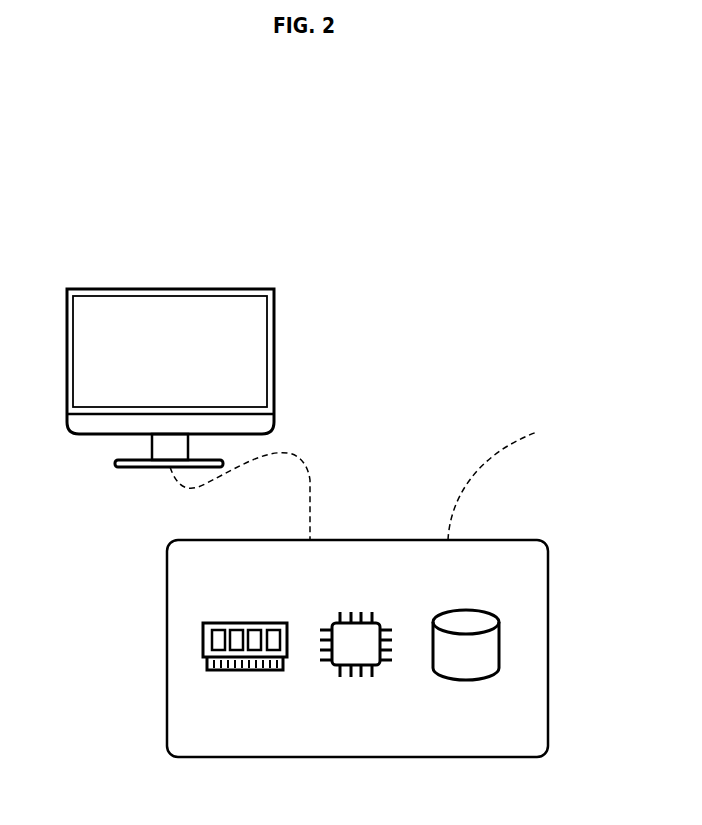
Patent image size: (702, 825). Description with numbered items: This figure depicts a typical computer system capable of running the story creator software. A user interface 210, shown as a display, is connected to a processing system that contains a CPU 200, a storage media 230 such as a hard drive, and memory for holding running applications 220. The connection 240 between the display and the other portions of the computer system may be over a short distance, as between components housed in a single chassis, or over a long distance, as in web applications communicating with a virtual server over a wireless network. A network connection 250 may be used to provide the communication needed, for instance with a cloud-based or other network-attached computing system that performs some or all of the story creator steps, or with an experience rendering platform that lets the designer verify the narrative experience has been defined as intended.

The CPU 200 is at (380, 623).
The user interface 210 is at (274, 362).
The memory for holding running applications 220 is at (203, 640).
The storage media 230 is at (473, 610).
The connection 240 is at (298, 458).
The network connection 250 is at (480, 466).